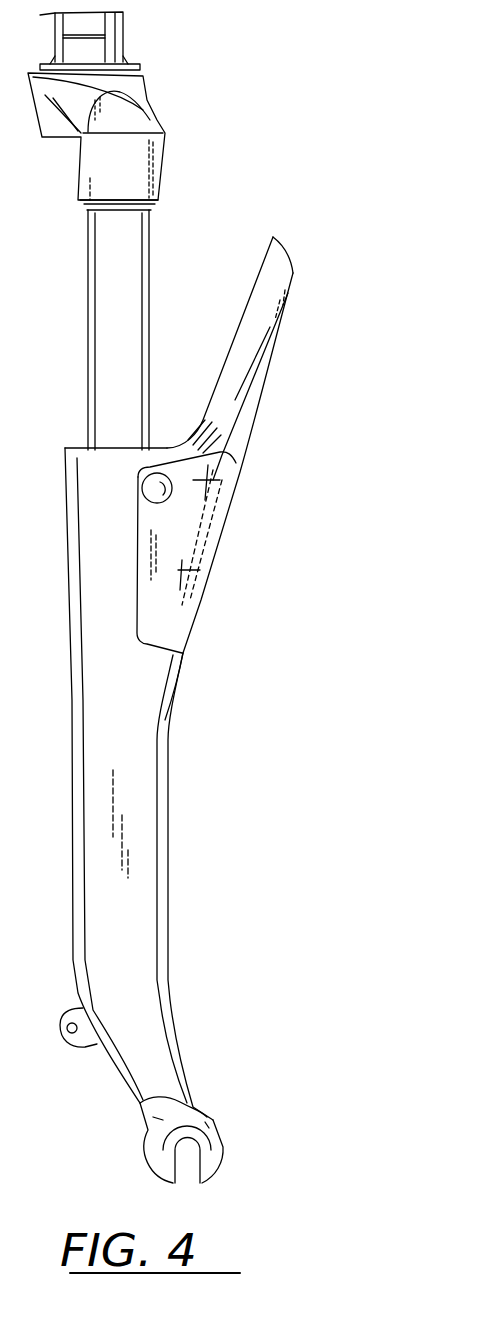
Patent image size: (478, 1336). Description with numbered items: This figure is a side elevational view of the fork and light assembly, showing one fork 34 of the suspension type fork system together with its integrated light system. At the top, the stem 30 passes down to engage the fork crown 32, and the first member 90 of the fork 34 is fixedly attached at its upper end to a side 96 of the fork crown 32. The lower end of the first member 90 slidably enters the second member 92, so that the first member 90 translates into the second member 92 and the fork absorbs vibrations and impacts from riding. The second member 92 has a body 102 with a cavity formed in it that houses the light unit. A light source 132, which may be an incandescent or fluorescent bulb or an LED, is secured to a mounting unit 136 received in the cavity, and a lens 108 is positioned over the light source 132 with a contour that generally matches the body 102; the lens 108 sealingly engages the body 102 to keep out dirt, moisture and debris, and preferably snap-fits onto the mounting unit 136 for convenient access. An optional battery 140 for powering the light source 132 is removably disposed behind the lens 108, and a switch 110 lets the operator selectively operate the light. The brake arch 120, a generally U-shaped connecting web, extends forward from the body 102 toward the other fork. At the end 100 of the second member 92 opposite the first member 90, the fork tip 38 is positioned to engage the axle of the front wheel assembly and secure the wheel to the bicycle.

The stem 30 is at (123, 22).
The fork crown 32 is at (143, 78).
The side of fork crown 96 is at (140, 117).
The first member 90 is at (150, 216).
The fork 34 is at (134, 225).
The brake arch 120 is at (257, 413).
The switch 110 is at (145, 492).
The light source 132 is at (217, 510).
The mounting unit 136 is at (220, 540).
The lens 108 is at (147, 552).
The battery 140 is at (180, 612).
The body 102 is at (152, 681).
The second member 92 is at (155, 835).
The end of second member 100 is at (223, 1113).
The fork tip 38 is at (212, 1140).